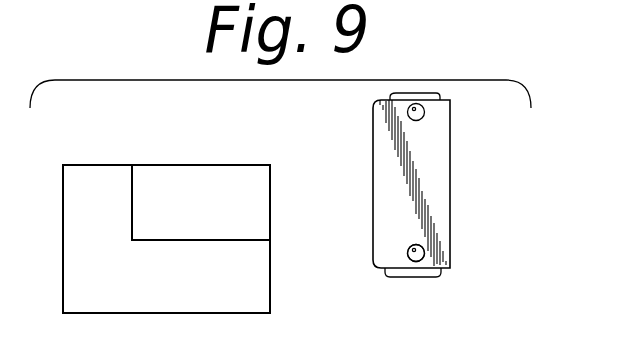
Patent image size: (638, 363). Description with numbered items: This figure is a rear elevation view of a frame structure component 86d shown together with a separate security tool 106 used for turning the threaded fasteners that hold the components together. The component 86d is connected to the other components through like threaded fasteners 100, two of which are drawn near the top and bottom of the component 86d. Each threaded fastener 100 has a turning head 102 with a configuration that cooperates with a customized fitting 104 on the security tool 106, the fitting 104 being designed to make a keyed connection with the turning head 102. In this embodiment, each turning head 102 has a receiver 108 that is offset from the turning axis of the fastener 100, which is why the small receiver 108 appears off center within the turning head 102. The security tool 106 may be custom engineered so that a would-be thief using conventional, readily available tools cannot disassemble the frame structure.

The component 86d is at (427, 187).
The threaded fastener 100 is at (416, 111).
The turning head 102 is at (423, 249).
The fitting 104 is at (225, 230).
The security tool 106 is at (112, 230).
The receiver 108 is at (414, 249).